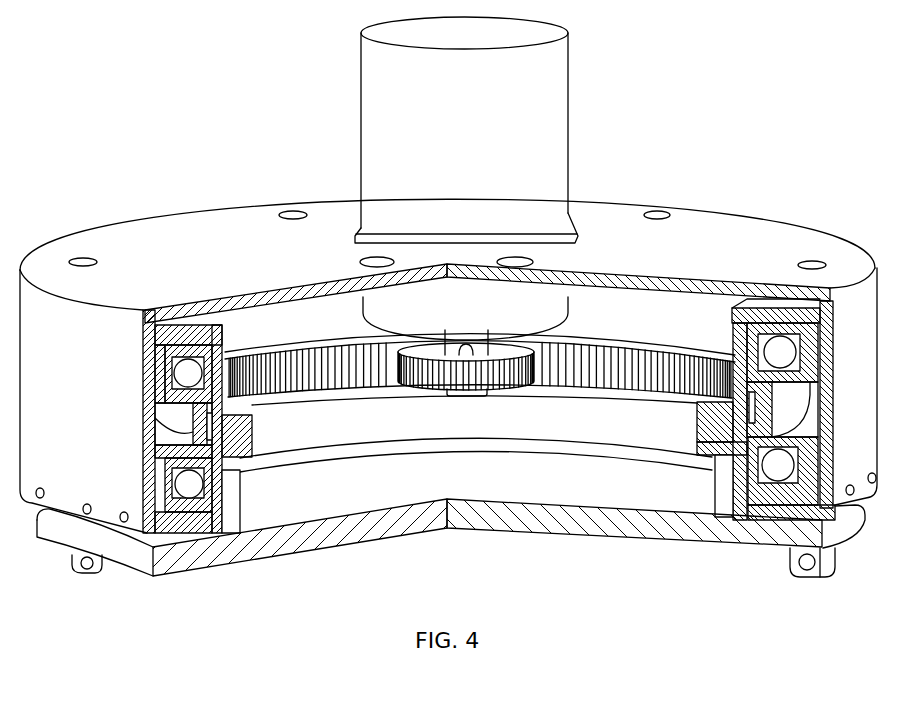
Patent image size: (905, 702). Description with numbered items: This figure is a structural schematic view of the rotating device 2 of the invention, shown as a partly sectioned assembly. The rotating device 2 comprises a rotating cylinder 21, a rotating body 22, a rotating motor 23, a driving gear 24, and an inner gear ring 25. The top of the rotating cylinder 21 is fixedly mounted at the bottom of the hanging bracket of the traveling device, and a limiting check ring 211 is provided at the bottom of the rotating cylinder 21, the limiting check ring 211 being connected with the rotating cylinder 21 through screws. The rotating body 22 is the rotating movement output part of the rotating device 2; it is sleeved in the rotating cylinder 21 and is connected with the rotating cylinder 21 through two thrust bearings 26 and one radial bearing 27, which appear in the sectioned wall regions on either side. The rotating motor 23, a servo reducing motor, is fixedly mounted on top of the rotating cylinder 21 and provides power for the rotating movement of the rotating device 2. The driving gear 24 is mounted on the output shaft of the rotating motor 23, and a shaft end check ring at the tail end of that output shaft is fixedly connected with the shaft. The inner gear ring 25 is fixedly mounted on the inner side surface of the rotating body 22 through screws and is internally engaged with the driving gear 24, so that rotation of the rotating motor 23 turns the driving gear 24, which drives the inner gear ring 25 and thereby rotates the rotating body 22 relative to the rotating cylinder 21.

The rotating device 2 is at (716, 219).
The rotating cylinder 21 is at (248, 220).
The rotating body 22 is at (313, 543).
The rotating motor 23 is at (554, 91).
The driving gear 24 is at (492, 392).
The inner gear ring 25 is at (647, 394).
The thrust bearing 26 is at (167, 375).
The radial bearing 27 is at (195, 428).
The limiting check ring 211 is at (220, 513).